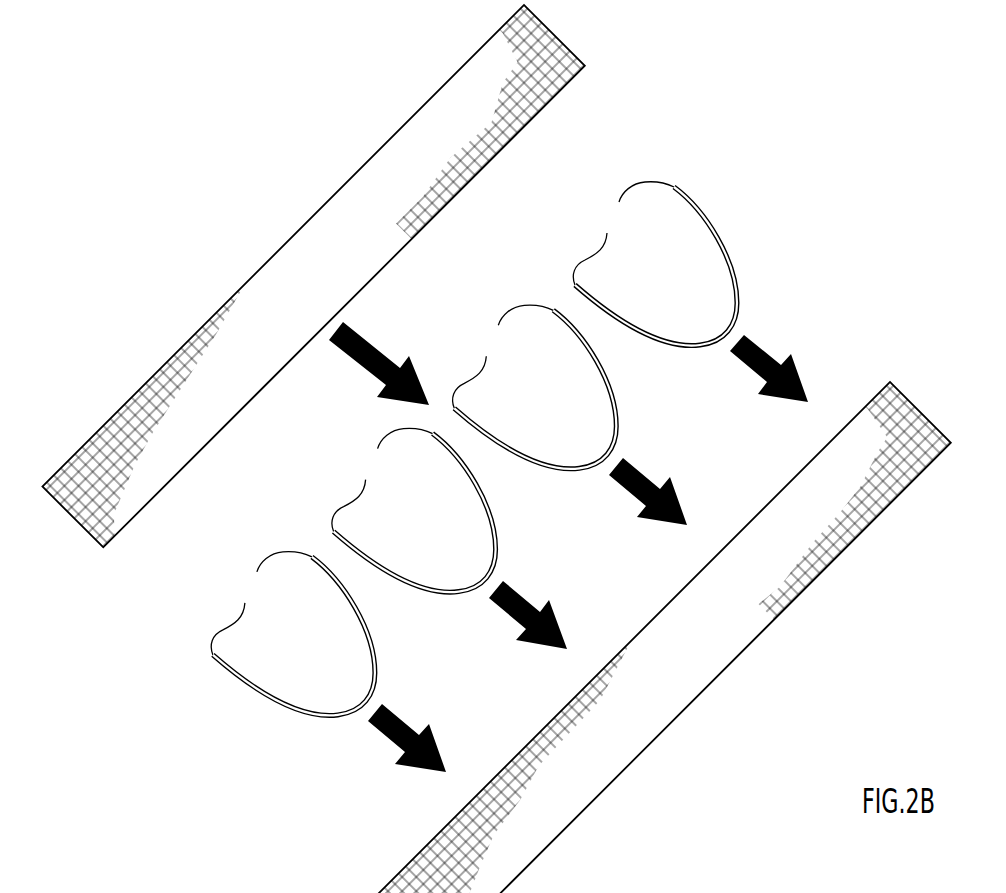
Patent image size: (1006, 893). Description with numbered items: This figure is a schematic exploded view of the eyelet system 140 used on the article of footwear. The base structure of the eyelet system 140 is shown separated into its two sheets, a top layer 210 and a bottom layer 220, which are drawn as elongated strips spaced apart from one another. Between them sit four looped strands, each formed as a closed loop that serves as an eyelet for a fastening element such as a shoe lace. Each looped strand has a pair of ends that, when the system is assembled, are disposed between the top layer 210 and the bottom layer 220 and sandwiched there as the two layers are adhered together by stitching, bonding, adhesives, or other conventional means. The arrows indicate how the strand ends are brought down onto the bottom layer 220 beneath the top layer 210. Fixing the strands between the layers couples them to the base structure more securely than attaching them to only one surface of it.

The eyelet system 140 is at (595, 464).
The top layer 210 is at (343, 186).
The bottom layer 220 is at (754, 638).